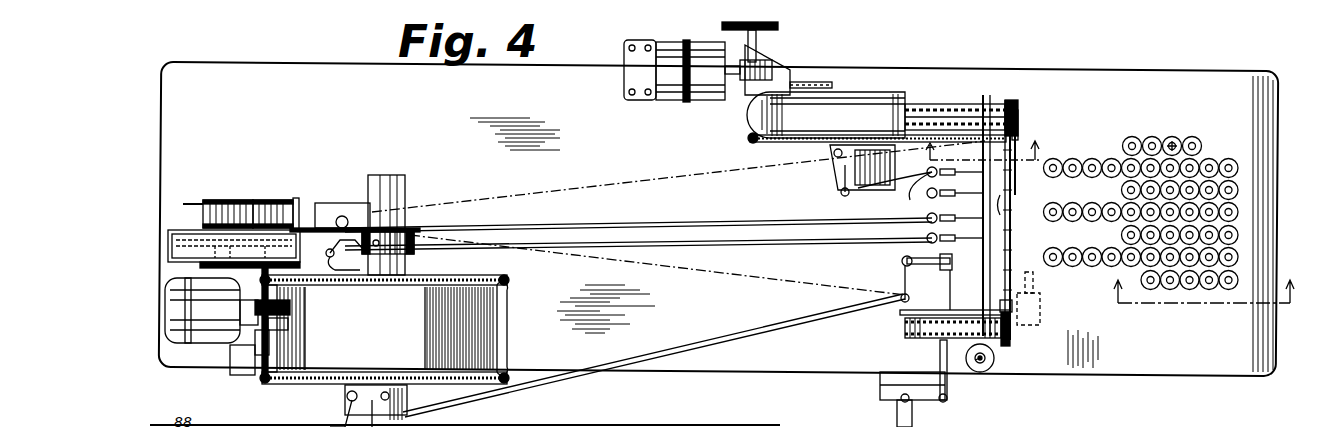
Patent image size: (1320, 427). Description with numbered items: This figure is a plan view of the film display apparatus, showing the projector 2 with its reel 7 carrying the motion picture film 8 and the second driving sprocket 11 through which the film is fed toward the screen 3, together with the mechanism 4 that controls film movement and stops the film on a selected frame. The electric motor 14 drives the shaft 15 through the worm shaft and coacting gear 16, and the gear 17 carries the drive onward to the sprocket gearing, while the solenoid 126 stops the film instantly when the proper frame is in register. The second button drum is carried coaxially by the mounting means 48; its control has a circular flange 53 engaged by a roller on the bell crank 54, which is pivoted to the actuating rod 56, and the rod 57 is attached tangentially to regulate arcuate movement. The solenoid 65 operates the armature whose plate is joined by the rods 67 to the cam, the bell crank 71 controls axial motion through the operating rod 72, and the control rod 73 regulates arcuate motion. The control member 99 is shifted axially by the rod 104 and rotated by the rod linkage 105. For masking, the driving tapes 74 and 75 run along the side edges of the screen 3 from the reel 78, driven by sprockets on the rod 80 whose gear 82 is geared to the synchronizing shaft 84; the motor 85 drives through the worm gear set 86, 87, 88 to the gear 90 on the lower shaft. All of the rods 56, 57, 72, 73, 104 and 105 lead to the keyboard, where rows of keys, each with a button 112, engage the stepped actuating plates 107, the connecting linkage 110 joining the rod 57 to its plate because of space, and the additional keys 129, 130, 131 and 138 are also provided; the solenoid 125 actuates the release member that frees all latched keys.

The projector 2 is at (168, 252).
The screen 3 is at (1012, 135).
The mechanism for controlling film movement 4 is at (200, 240).
The reel 7 is at (262, 190).
The motion picture film 8 is at (225, 200).
The second driving sprocket 11 is at (1206, 305).
The electric motor 14 is at (185, 345).
The shaft 15 is at (275, 323).
The worm shaft and coacting gear 16 is at (290, 306).
The gear 17 is at (976, 164).
The mounting means 48 is at (495, 278).
The circular flange 53 is at (406, 385).
The bell crank 54 is at (331, 420).
The actuating rod 56 is at (765, 332).
The rod 57 is at (770, 426).
The solenoid 65 is at (405, 190).
The rods 67 is at (414, 270).
The bell crank 71 is at (332, 257).
The operating rod 72 is at (816, 242).
The control rod 73 is at (760, 216).
The driving tape 74 is at (1008, 330).
The driving tape 75 is at (1018, 118).
The reel 78 is at (925, 100).
The rod 80 is at (975, 272).
The gear 82 is at (984, 372).
The shaft 84 is at (977, 366).
The motor 85 is at (672, 92).
The gear 86 is at (772, 65).
The gear 87 is at (780, 30).
The gear 88 is at (824, 82).
The gear 90 is at (1030, 100).
The control member 99 is at (848, 178).
The rod 104 is at (850, 194).
The rod linkage 105 is at (918, 188).
The actuating plate 107 is at (1008, 205).
The connecting linkage 110 is at (940, 355).
The button 112 is at (1112, 265).
The solenoid 125 is at (1040, 312).
The solenoid 126 is at (243, 378).
The key 129 is at (1196, 138).
The key 130 is at (1172, 137).
The key 131 is at (1152, 137).
The key 138 is at (1132, 137).